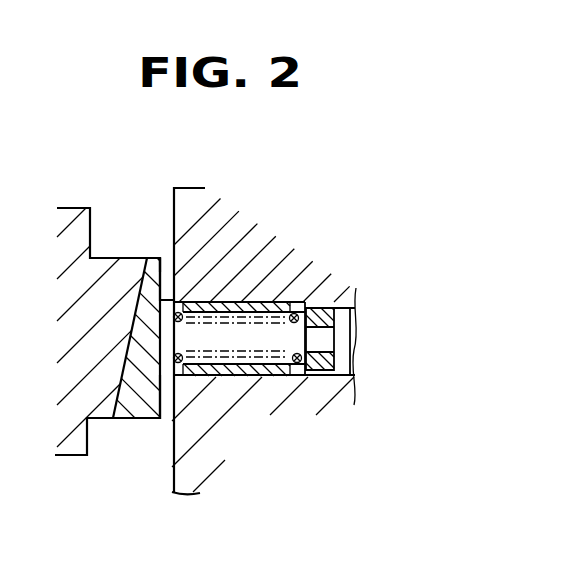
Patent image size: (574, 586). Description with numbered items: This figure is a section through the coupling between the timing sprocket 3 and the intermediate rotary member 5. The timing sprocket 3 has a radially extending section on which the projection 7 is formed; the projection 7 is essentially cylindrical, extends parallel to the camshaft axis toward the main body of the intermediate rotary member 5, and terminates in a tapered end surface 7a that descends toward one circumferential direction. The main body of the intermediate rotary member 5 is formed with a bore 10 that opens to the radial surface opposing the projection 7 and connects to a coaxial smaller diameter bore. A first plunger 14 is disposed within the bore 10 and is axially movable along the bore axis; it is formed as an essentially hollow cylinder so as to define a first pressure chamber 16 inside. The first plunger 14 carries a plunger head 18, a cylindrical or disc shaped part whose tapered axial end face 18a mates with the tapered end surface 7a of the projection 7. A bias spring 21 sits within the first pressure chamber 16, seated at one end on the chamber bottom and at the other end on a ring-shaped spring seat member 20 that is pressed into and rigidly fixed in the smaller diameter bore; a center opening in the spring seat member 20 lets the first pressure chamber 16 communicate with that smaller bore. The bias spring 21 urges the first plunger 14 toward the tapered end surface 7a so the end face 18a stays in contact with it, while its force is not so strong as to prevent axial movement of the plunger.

The timing sprocket 3 is at (80, 208).
The intermediate rotary member 5 is at (192, 208).
The projection 7 is at (115, 259).
The tapered end surface 7a is at (149, 262).
The bore 10 is at (233, 377).
The first plunger 14 is at (240, 303).
The first pressure chamber 16 is at (258, 335).
The plunger head 18 is at (147, 419).
The tapered axial end face 18a is at (122, 366).
The spring seat member 20 is at (340, 290).
The bias spring 21 is at (181, 312).